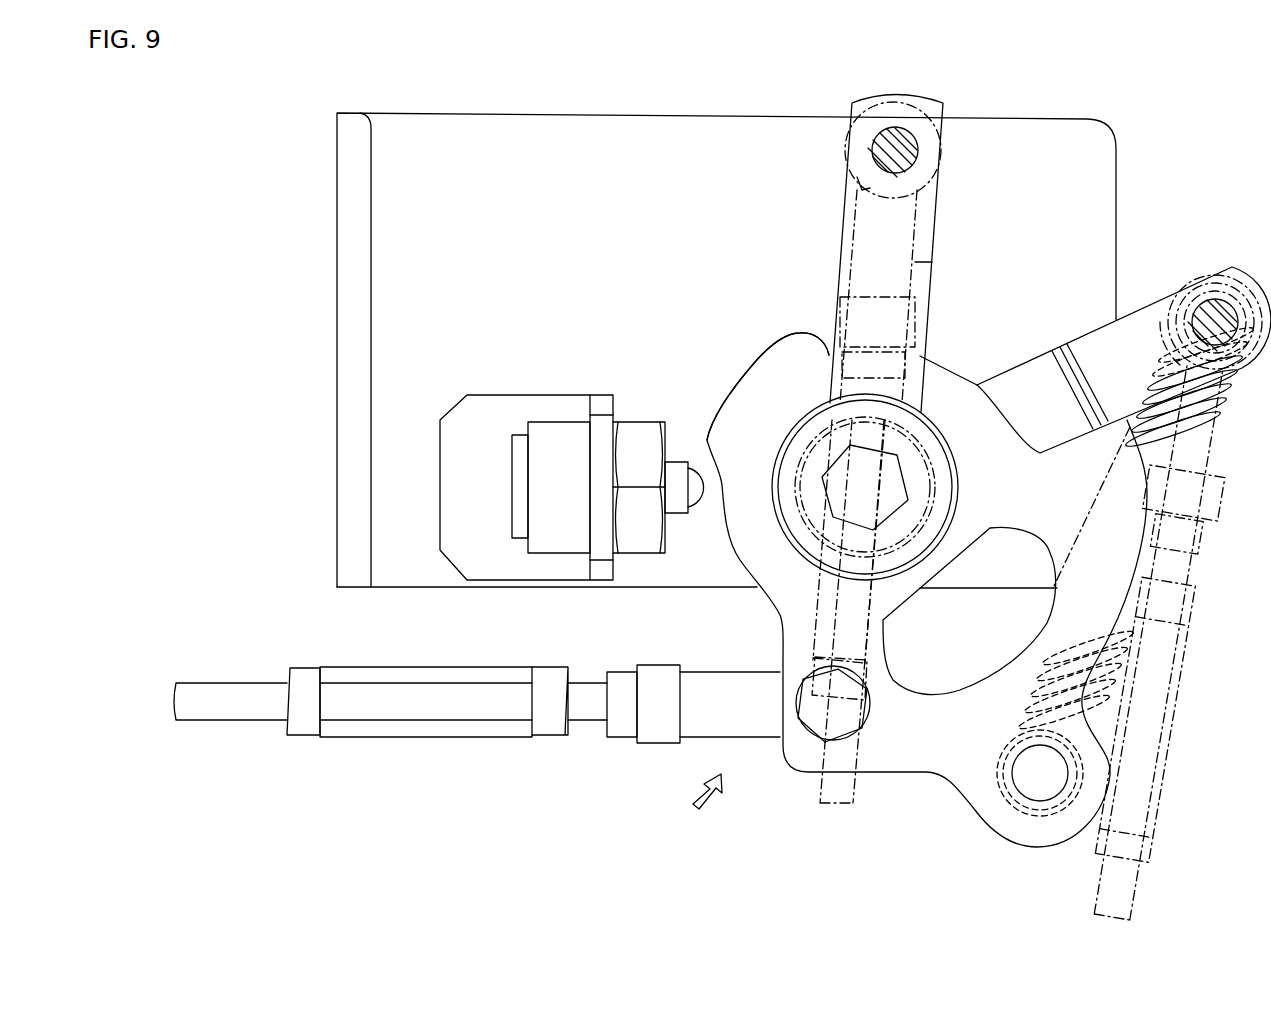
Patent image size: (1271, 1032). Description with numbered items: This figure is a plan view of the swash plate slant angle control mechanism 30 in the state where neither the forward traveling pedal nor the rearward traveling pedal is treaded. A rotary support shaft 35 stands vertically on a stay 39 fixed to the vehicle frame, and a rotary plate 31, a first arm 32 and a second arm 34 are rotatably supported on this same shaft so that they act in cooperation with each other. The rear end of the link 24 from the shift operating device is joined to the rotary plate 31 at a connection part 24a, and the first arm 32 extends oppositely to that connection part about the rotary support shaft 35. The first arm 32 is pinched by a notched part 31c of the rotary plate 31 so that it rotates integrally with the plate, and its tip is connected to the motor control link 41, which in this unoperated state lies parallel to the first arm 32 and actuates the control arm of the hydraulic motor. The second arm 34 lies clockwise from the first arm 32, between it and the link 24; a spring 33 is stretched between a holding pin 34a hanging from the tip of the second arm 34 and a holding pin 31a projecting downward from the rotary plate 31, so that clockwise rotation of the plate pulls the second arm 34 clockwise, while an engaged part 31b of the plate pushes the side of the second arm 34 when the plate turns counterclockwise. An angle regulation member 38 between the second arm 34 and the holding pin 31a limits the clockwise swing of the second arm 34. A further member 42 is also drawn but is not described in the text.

The link 24 is at (453, 752).
The connection part 24a is at (868, 740).
The swash plate slant angle control mechanism 30 is at (696, 810).
The rotary plate 31 is at (770, 610).
The holding pin 31a is at (1020, 763).
The engaged part 31b is at (1072, 443).
The notched part 31c is at (828, 336).
The first arm 32 is at (935, 232).
The spring 33 is at (1188, 575).
The second arm 34 is at (1103, 323).
The holding pin 34a is at (1212, 300).
The rotary support shaft 35 is at (933, 417).
The angle regulation member 38 is at (1043, 553).
The stay 39 is at (617, 222).
The motor control link 41 is at (933, 266).
The adjustment rod 42 is at (1147, 882).